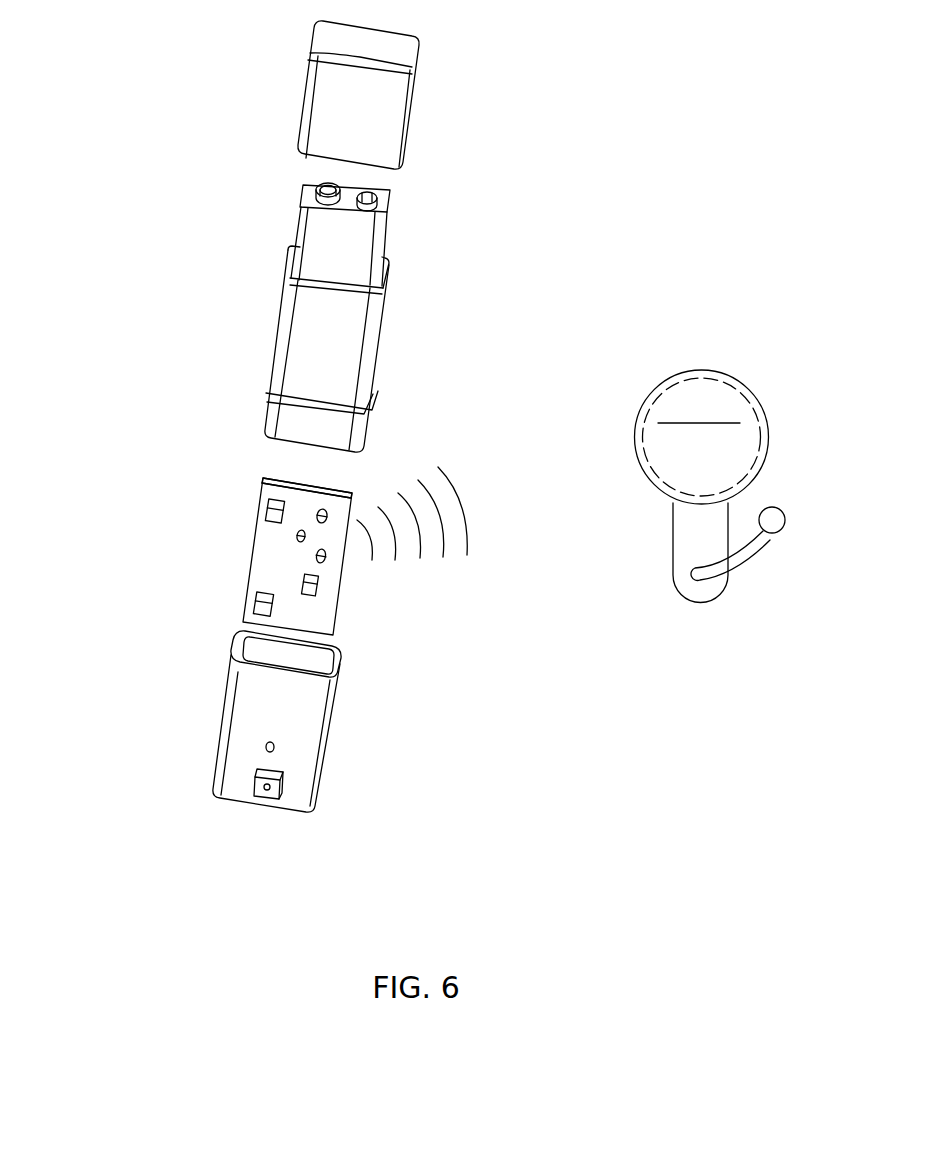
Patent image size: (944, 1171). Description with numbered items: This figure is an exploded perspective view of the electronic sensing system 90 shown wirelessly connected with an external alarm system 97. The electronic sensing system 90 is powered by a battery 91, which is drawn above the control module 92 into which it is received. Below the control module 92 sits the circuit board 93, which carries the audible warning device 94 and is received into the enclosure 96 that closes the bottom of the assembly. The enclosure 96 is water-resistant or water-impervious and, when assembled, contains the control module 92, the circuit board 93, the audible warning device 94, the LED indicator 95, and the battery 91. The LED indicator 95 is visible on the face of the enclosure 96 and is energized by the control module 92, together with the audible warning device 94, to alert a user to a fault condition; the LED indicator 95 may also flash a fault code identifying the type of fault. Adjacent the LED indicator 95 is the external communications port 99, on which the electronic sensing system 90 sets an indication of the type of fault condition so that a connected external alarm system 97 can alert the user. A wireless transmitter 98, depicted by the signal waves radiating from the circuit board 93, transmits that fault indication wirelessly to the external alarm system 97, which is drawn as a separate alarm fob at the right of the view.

The electronic sensing system 90 is at (228, 247).
The battery 91 is at (387, 232).
The control module 92 is at (272, 367).
The circuit board 93 is at (270, 538).
The audible warning device 94 is at (307, 483).
The LED indicator 95 is at (273, 750).
The enclosure 96 is at (343, 715).
The external alarm system 97 is at (718, 370).
The wireless transmitter 98 is at (353, 553).
The external communications port 99 is at (270, 788).